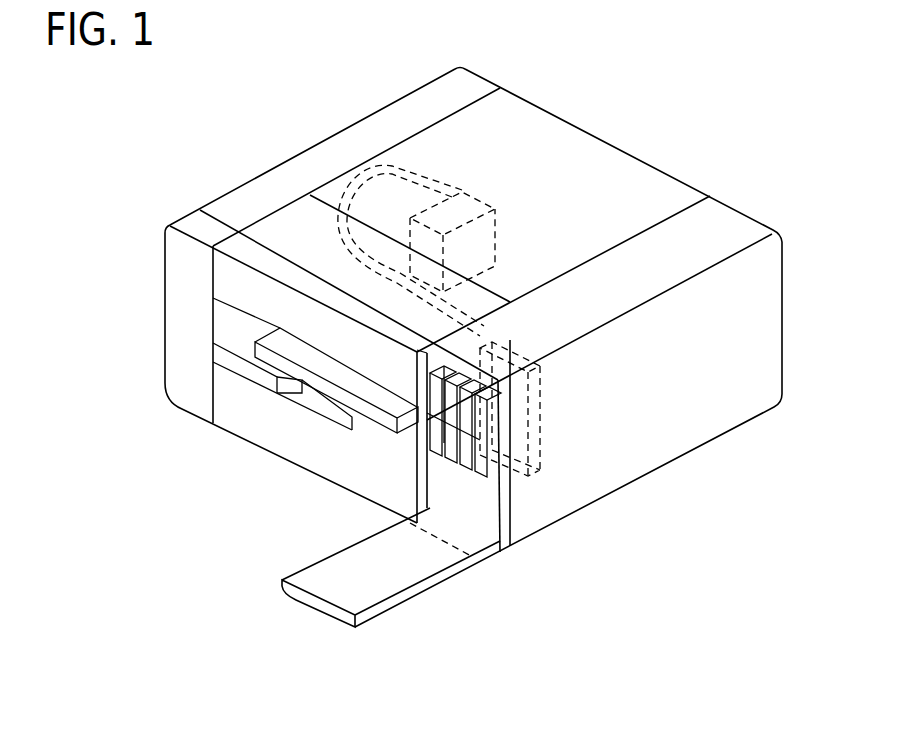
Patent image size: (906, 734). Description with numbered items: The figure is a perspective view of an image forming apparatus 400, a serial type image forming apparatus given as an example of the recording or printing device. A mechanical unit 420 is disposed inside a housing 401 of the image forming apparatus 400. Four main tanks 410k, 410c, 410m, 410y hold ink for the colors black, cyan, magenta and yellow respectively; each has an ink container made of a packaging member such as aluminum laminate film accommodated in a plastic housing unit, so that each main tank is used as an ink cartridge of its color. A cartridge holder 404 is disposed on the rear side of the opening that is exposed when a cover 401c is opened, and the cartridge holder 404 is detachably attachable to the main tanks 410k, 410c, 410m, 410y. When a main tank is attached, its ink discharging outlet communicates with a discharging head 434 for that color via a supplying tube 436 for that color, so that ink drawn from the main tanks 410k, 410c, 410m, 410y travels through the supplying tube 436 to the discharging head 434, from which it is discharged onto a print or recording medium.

The image forming apparatus 400 is at (702, 98).
The housing 401 is at (284, 165).
The cover 401c is at (423, 588).
The cartridge holder 404 is at (545, 416).
The main tank for black 410k is at (442, 440).
The main tank for cyan 410c is at (455, 447).
The main tank for magenta 410m is at (467, 455).
The main tank for yellow 410y is at (478, 462).
The mechanical unit 420 is at (553, 202).
The discharging head 434 is at (475, 195).
The supplying tube 436 is at (377, 170).